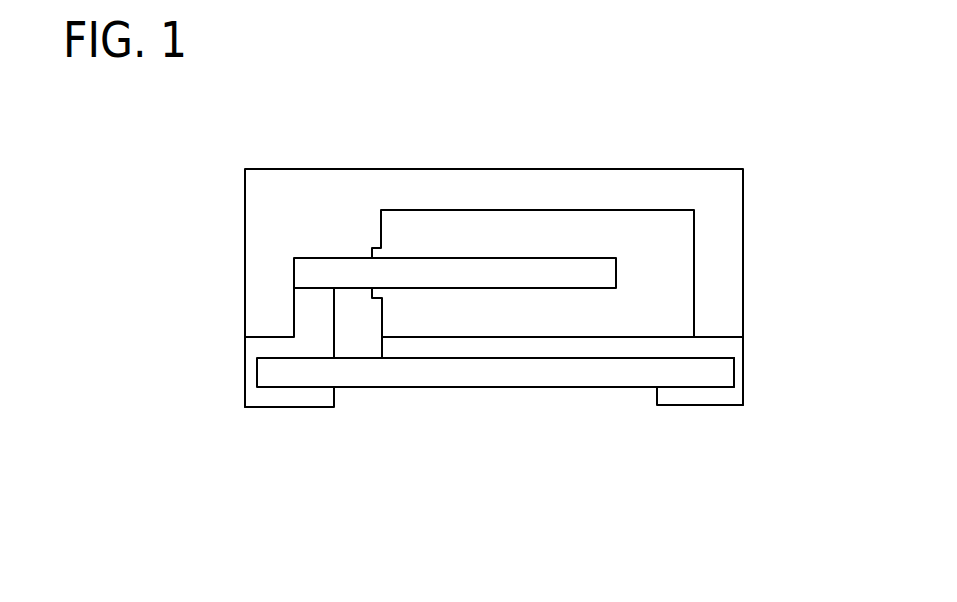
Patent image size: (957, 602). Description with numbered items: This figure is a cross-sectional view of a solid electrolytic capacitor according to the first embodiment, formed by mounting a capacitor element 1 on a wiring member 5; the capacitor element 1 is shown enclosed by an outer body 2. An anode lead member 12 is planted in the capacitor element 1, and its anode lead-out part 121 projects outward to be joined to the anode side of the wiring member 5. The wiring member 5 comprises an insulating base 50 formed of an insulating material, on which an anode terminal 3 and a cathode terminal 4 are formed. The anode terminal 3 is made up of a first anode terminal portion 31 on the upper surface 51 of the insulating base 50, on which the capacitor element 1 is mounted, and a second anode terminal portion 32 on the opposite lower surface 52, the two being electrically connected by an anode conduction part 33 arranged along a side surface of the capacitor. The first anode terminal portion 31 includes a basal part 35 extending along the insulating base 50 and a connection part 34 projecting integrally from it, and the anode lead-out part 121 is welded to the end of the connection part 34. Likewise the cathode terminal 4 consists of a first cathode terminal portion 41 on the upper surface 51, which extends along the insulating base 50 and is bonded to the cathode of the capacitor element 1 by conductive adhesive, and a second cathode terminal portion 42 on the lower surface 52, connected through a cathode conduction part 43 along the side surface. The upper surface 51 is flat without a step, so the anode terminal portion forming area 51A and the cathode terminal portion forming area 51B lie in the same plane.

The capacitor element 1 is at (517, 222).
The sealing resin 2 is at (667, 187).
The anode lead member 12 is at (452, 268).
The anode lead-out part 121 is at (332, 268).
The anode terminal 3 is at (113, 320).
The first anode terminal portion 31 is at (173, 347).
The second anode terminal portion 32 is at (285, 397).
The anode conduction part 33 is at (258, 372).
The connection part 34 is at (303, 317).
The basal part 35 is at (275, 347).
The cathode terminal 4 is at (820, 320).
The first cathode terminal portion 41 is at (713, 345).
The second cathode terminal portion 42 is at (717, 397).
The cathode conduction part 43 is at (740, 369).
The wiring member 5 is at (472, 375).
The insulating base 50 is at (518, 375).
The upper surface 51 is at (348, 357).
The anode terminal portion forming area 51A is at (300, 357).
The cathode terminal portion forming area 51B is at (603, 357).
The lower surface 52 is at (423, 388).